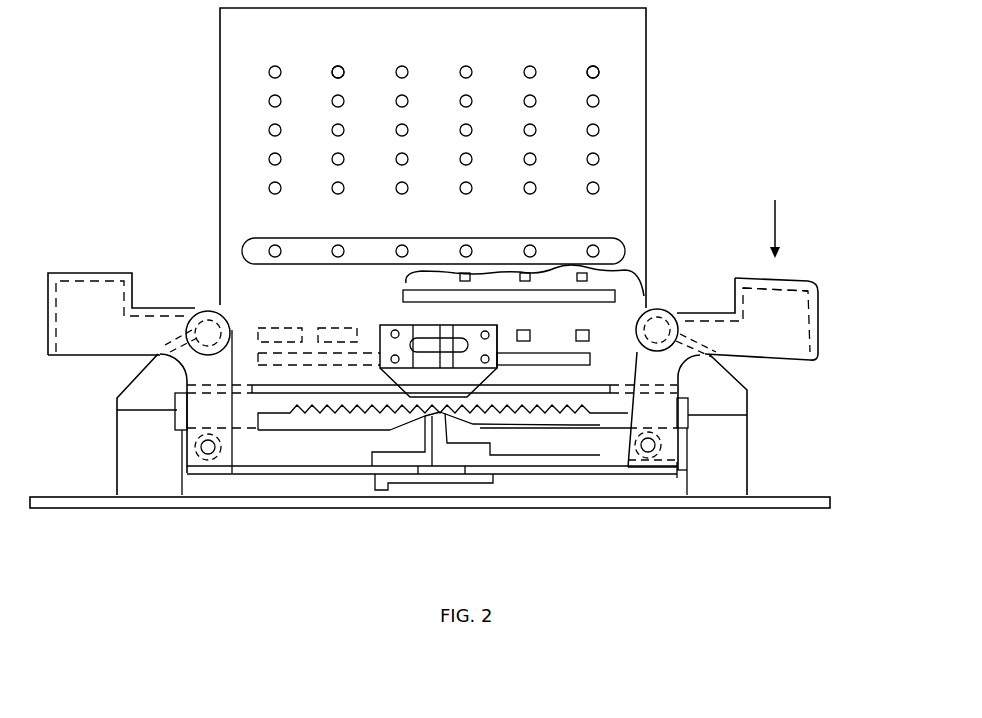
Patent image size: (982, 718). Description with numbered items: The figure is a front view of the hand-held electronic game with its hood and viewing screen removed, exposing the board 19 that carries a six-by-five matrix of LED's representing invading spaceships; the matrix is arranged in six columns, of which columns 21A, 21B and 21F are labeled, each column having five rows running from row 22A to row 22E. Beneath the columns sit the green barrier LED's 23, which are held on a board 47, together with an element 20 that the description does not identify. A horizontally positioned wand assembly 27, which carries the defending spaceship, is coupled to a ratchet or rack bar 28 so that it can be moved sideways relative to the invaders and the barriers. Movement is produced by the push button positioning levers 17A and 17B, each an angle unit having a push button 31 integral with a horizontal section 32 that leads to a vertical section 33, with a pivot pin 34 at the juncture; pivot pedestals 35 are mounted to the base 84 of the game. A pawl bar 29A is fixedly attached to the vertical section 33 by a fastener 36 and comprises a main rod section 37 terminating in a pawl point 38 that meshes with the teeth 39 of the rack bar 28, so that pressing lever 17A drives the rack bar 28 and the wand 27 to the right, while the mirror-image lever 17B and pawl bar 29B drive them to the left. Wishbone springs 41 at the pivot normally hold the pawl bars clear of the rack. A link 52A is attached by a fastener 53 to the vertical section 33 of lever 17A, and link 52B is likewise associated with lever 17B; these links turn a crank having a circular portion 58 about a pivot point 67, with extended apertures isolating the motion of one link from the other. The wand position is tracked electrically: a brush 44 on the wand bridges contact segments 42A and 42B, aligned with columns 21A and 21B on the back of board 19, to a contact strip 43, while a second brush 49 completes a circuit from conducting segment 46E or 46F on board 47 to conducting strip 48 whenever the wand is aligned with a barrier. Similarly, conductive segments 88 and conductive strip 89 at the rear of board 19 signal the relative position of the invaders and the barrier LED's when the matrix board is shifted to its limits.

The board 19 is at (230, 46).
The column of LED's 21A is at (286, 66).
The column of LED's 21B is at (337, 54).
The column of LED's 21F is at (596, 56).
The row of LED's 22A is at (603, 73).
The row of LED's 22E is at (613, 188).
The barrier LED 23 is at (612, 248).
The key tray 20 is at (246, 246).
The conductive segment 88 is at (603, 278).
The conductive strip 89 is at (440, 298).
The push button positioning lever 17B is at (72, 268).
The push button positioning lever 17A is at (808, 272).
The push button 31 is at (788, 318).
The horizontal section 32 is at (720, 332).
The pivot pin 34 is at (661, 306).
The wishbone spring 41 is at (686, 310).
The vertical section 33 is at (660, 408).
The pivot pedestal 35 is at (728, 461).
The fastener 36 is at (638, 474).
The main rod section 37 is at (594, 447).
The contact strip 43 is at (268, 364).
The contact segment 42A is at (280, 327).
The contact segment 42B is at (330, 327).
The contact or brush 49 is at (400, 328).
The contact or brush 44 is at (457, 330).
The wand assembly 27 is at (482, 330).
The conducting segment 46E is at (530, 334).
The conducting segment 46F is at (589, 334).
The board 47 is at (598, 358).
The rack bar 28 is at (570, 396).
The conducting strip 48 is at (534, 364).
The pawl bar 29A is at (470, 432).
The pawl bar 29B is at (338, 444).
The teeth 39 is at (430, 413).
The pivot point 67 is at (435, 490).
The pawl point 38 is at (453, 432).
The circular portion 58 is at (488, 478).
The link 52A is at (612, 476).
The link 52B is at (258, 470).
The fastener 53 is at (670, 474).
The base 84 is at (806, 508).